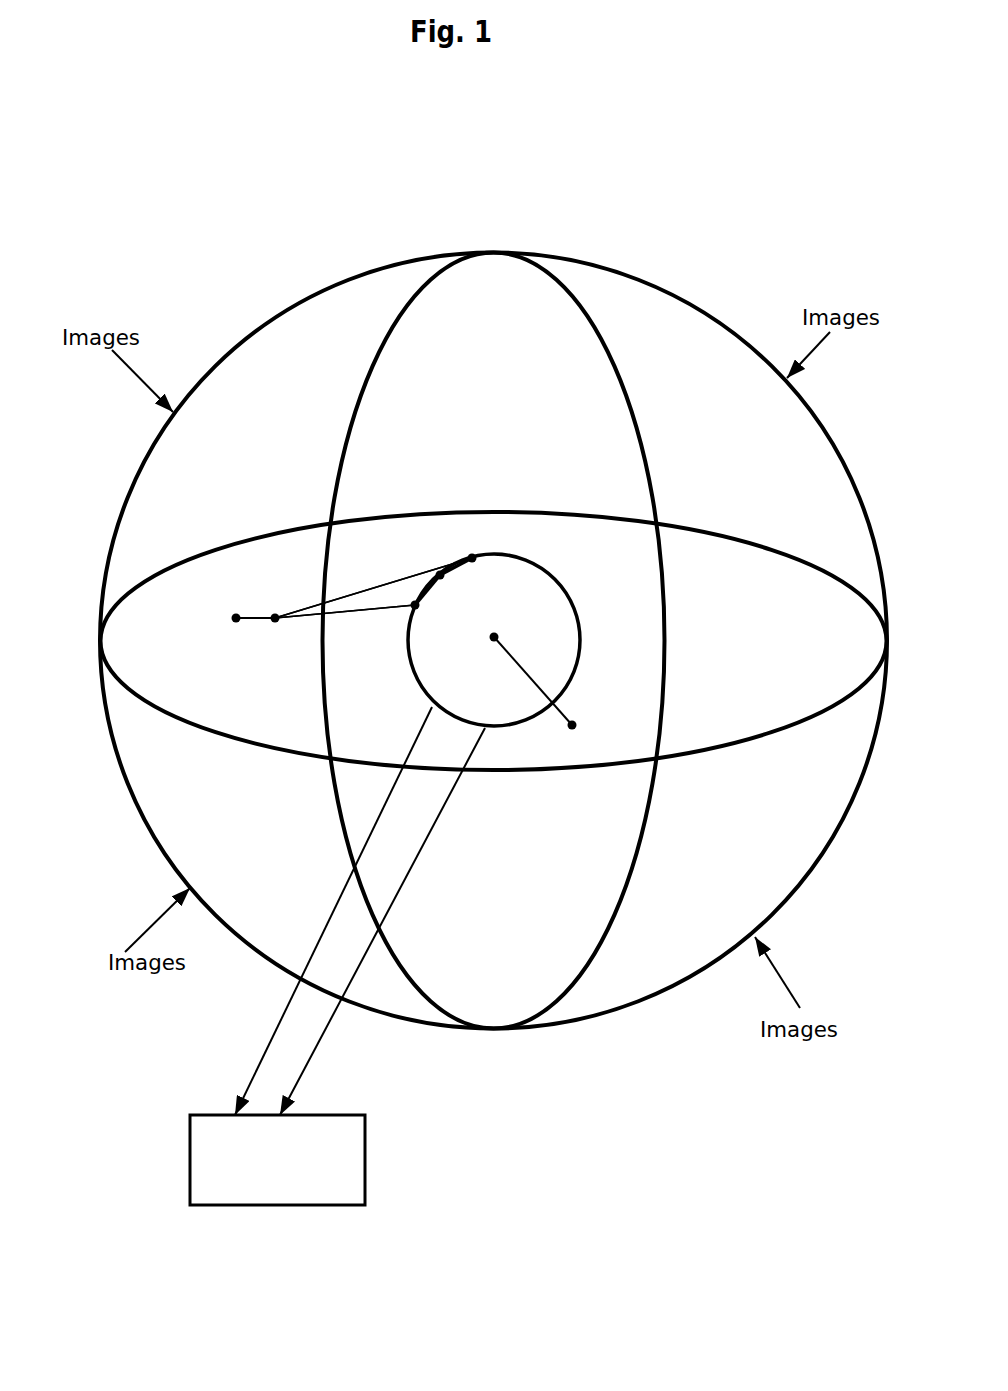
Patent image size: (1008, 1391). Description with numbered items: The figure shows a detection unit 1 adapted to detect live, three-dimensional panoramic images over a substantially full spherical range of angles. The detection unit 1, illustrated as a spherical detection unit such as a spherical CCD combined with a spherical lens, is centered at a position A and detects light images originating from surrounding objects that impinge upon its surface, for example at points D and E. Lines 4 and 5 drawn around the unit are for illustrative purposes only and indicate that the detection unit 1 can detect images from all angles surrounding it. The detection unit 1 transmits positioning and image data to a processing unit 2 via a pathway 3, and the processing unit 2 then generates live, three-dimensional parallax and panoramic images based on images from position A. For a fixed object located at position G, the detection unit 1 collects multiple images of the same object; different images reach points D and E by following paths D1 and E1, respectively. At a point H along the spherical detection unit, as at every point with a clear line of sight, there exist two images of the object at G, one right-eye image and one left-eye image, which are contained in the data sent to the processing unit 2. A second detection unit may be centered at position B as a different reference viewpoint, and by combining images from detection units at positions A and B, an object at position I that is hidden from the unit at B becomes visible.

The detection unit 1 is at (580, 615).
The processing unit 2 is at (365, 1180).
The pathway 3 is at (280, 1027).
The line 4 is at (568, 997).
The line 5 is at (268, 748).
The position A is at (530, 668).
The position B is at (582, 726).
The point D is at (468, 555).
The path D1 is at (367, 588).
The point E is at (420, 608).
The path E1 is at (358, 613).
The position G is at (369, 605).
The point H is at (438, 578).
The position I is at (254, 633).